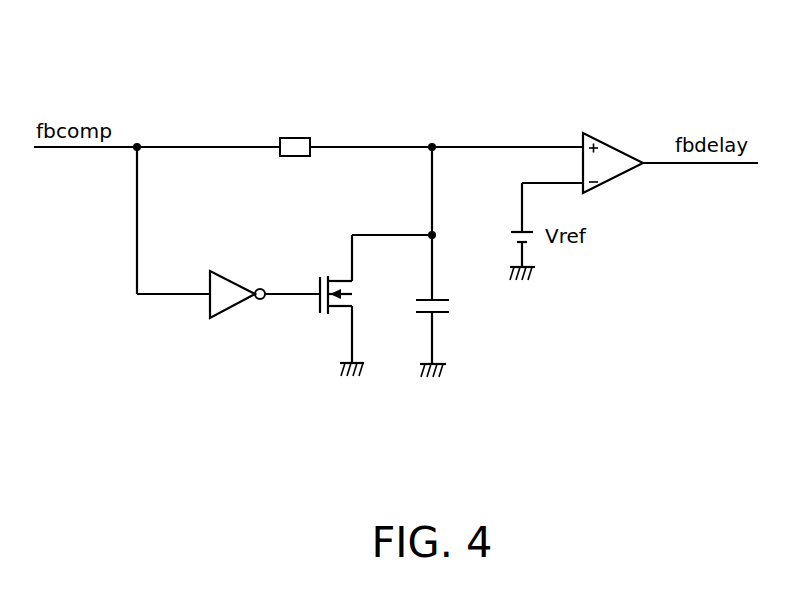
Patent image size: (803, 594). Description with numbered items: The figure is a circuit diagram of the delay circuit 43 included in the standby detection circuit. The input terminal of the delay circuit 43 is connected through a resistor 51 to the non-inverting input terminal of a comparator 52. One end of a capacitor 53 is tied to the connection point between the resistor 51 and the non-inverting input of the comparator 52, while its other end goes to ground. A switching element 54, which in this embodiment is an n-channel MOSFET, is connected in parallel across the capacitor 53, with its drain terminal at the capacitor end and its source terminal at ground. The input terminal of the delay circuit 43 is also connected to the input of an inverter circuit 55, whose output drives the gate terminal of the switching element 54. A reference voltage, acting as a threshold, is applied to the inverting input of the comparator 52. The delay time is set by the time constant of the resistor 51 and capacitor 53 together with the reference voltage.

The delay circuit 43 is at (516, 60).
The resistor 51 is at (295, 138).
The comparator 52 is at (620, 150).
The capacitor 53 is at (455, 307).
The switching element 54 is at (333, 272).
The inverter circuit 55 is at (232, 270).